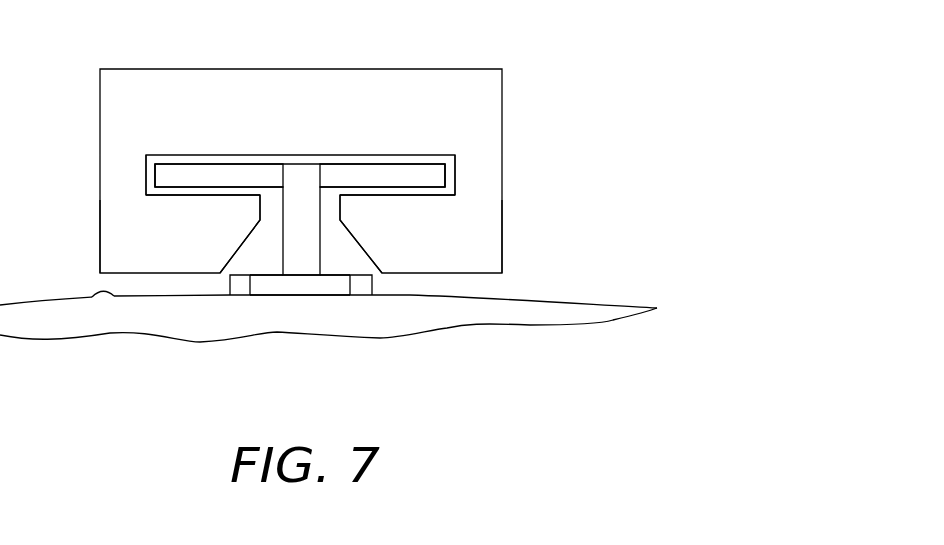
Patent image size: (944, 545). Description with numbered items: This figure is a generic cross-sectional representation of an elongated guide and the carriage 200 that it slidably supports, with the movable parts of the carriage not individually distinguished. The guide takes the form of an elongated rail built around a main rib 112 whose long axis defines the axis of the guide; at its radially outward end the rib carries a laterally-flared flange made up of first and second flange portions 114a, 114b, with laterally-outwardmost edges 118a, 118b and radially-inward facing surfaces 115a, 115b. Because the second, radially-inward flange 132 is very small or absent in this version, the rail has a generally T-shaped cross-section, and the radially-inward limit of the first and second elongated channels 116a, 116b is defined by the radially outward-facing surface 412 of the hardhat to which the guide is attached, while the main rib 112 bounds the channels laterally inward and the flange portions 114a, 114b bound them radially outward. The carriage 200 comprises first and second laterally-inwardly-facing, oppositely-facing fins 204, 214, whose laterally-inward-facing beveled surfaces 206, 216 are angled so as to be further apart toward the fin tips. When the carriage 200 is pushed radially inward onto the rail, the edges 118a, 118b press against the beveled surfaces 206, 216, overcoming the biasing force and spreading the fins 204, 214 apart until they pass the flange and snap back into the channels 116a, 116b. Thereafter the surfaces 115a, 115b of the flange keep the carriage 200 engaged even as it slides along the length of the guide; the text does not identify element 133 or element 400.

The carriage 200 is at (502, 68).
The main rib 112 is at (300, 196).
The first flange portion 114a is at (182, 168).
The second flange portion 114b is at (425, 176).
The first radially-inward facing surface 115a is at (220, 194).
The second radially-inward facing surface 115b is at (356, 193).
The first elongated channel 116a is at (263, 249).
The second elongated channel 116b is at (340, 250).
The first laterally-outwardmost edge 118a is at (147, 173).
The second laterally-outwardmost edge 118b is at (448, 172).
The first fin 204 is at (217, 237).
The second fin 214 is at (385, 239).
The first beveled surface 206 is at (238, 253).
The second beveled surface 216 is at (366, 252).
The radially-inward flange 132 is at (270, 285).
The gate dielectric layer 133 is at (313, 298).
The substrate 400 is at (612, 315).
The radially outward-facing surface 412 is at (92, 301).